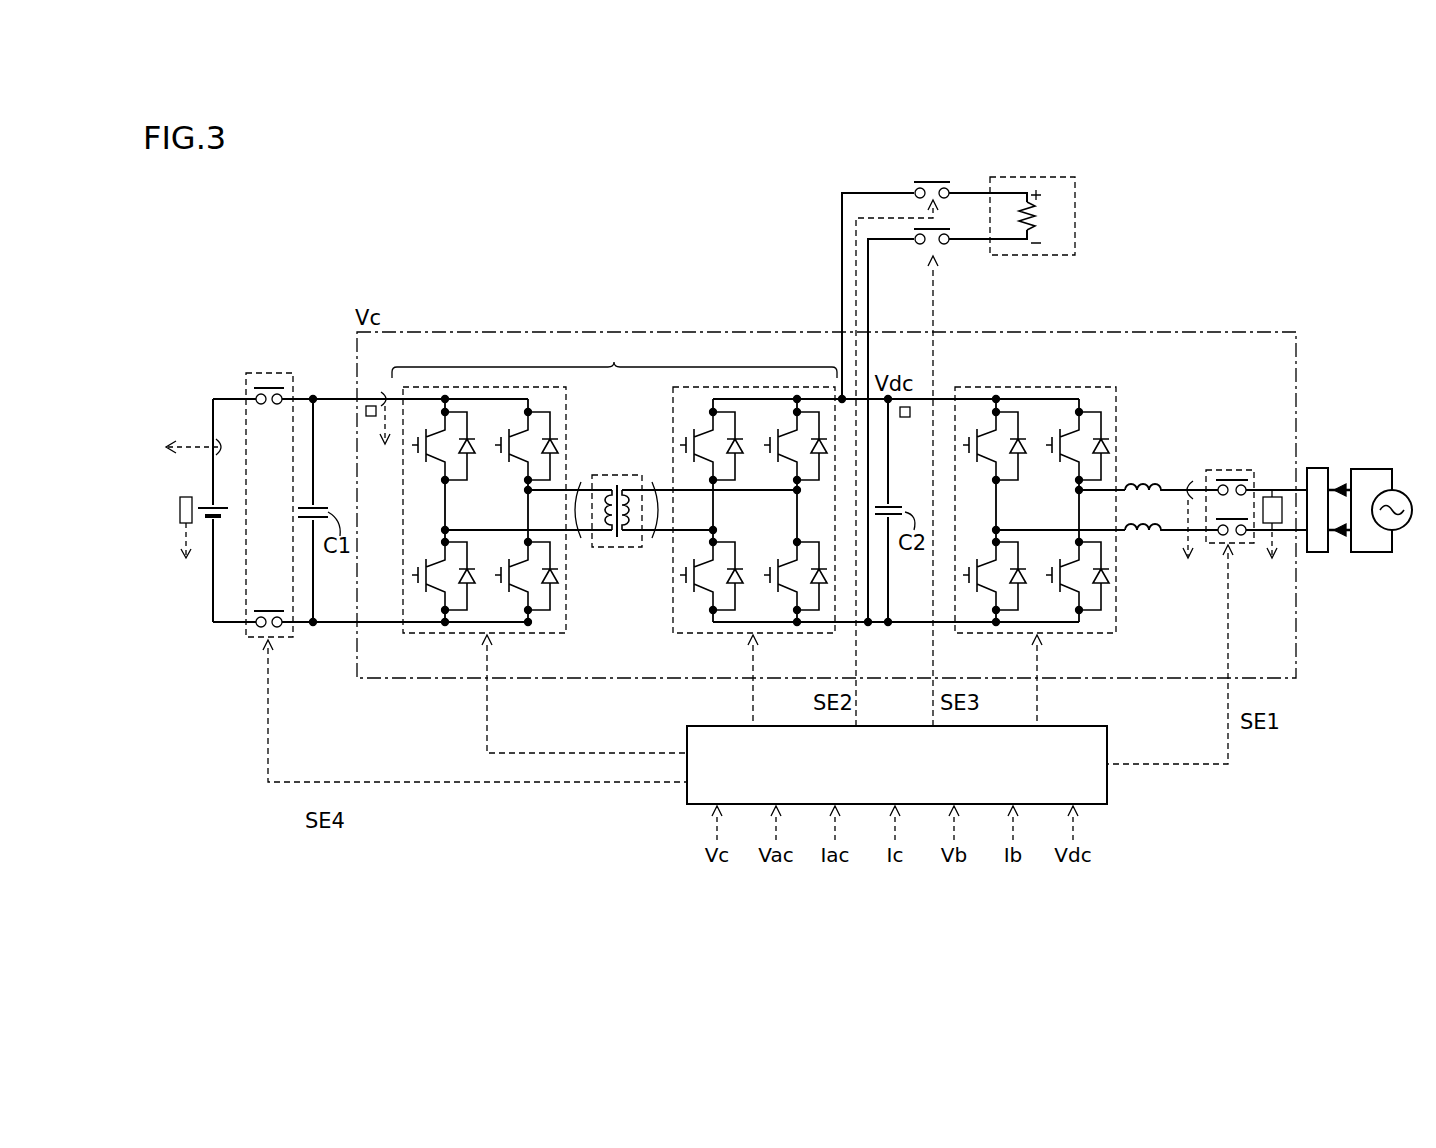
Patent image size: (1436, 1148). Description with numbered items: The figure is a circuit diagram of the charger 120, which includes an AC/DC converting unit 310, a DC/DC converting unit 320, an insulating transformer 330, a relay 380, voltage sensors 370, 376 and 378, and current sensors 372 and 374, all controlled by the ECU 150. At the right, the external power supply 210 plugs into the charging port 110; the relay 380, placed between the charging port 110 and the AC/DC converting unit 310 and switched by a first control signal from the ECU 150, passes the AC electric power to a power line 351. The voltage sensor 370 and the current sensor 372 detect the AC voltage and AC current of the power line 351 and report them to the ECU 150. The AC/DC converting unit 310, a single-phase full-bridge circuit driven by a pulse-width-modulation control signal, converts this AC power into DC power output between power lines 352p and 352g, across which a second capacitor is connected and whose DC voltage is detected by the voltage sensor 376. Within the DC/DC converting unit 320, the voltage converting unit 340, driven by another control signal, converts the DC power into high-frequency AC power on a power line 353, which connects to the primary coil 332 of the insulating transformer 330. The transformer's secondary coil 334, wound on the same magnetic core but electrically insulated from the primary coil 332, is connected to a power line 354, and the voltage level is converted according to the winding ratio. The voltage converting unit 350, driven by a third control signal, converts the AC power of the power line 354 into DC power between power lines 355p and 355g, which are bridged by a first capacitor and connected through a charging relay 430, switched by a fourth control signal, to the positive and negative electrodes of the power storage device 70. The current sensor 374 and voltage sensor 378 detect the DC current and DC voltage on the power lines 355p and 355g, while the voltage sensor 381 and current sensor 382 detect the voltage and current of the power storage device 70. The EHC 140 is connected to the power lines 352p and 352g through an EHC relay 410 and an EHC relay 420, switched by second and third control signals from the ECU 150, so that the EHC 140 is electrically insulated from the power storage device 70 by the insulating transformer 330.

The power storage device 70 is at (220, 506).
The charging port 110 is at (1318, 468).
The charger 120 is at (1188, 331).
The EHC 140 is at (1075, 220).
The ECU 150 is at (1066, 726).
The external power supply 210 is at (1402, 494).
The AC/DC converting unit 310 is at (1015, 387).
The DC/DC converting unit 320 is at (614, 357).
The insulating transformer 330 is at (620, 475).
The primary coil 332 is at (630, 492).
The secondary coil 334 is at (608, 492).
The voltage converting unit 340 is at (755, 387).
The voltage converting unit 350 is at (487, 387).
The power line 351 is at (1166, 535).
The power line 353 is at (655, 540).
The power line 354 is at (578, 540).
The power line 355p is at (328, 397).
The power line 355g is at (336, 624).
The power line 352p is at (1052, 398).
The power line 352g is at (947, 624).
The voltage sensor 370 is at (1272, 497).
The current sensor 372 is at (1183, 488).
The current sensor 374 is at (385, 392).
The voltage sensor 376 is at (905, 418).
The voltage sensor 378 is at (372, 417).
The relay 380 is at (1228, 470).
The voltage sensor 381 is at (180, 511).
The current sensor 382 is at (222, 447).
The EHC relay 410 is at (930, 182).
The EHC relay 420 is at (940, 244).
The charging relay 430 is at (271, 372).